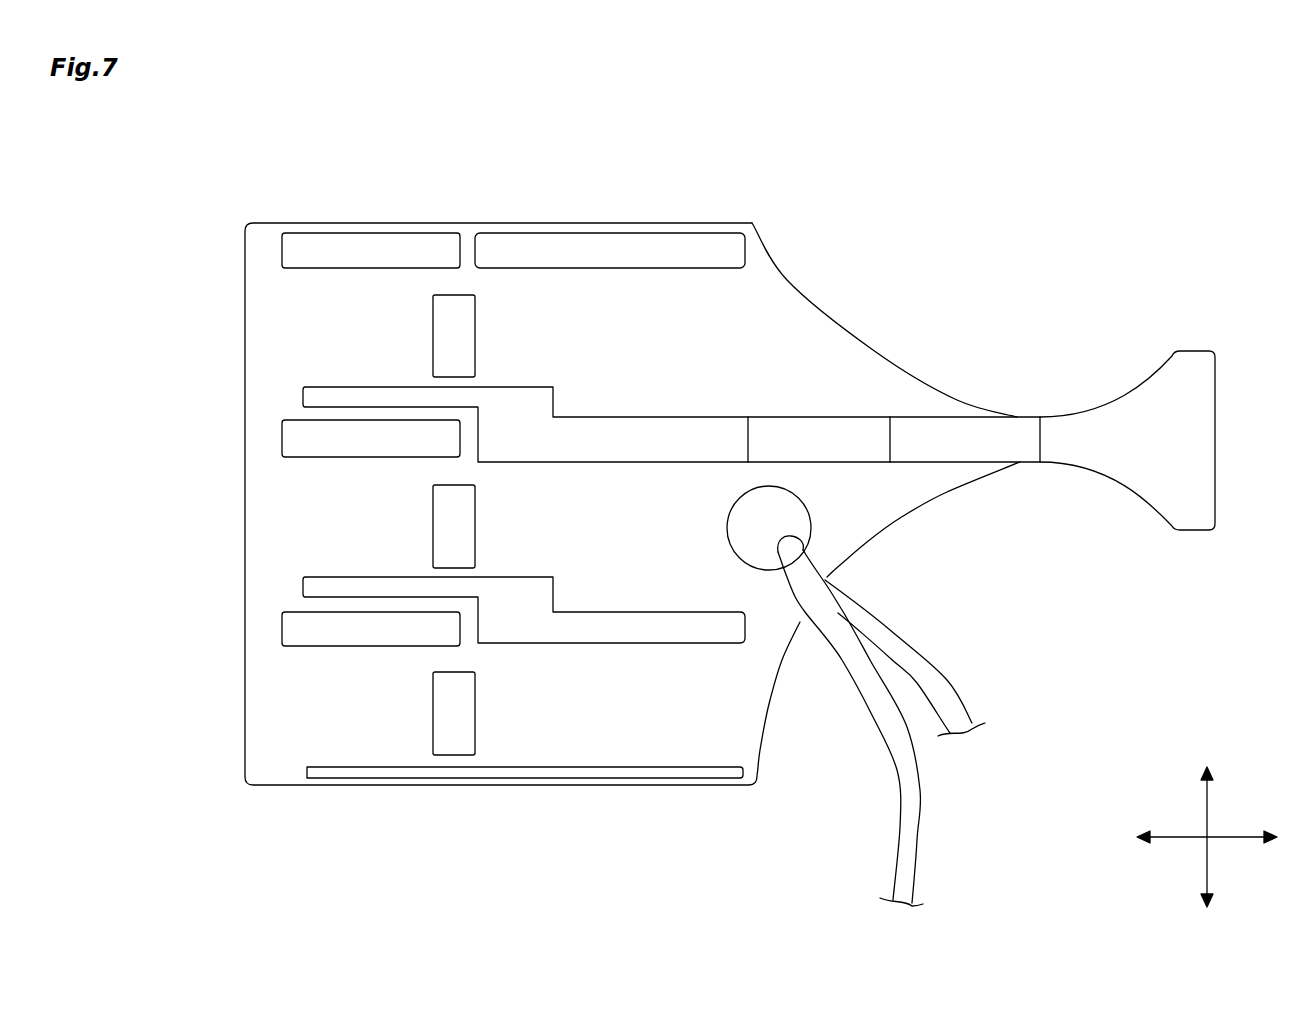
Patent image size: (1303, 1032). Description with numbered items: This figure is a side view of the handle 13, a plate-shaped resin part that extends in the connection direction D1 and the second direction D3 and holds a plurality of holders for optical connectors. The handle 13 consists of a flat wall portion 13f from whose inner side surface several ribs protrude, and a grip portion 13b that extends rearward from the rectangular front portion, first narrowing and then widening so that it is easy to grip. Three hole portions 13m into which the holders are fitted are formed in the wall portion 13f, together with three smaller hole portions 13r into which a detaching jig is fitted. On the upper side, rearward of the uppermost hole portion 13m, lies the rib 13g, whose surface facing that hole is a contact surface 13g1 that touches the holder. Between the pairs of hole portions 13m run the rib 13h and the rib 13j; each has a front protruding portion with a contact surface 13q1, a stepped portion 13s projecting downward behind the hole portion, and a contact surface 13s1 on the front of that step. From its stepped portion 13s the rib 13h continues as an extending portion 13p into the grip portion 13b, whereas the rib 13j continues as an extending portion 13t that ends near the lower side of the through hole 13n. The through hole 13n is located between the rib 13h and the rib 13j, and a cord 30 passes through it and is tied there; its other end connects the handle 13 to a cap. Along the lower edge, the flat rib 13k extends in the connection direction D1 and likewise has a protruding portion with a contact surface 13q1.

The handle 13 is at (1013, 185).
The grip portion 13b is at (1192, 440).
The wall portion 13f is at (765, 292).
The rib 13g is at (603, 240).
The contact surface 13g1 is at (468, 234).
The rib 13h is at (345, 385).
The rib 13j is at (342, 580).
The rib 13k is at (343, 780).
The hole portion 13m is at (338, 262).
The through hole 13n is at (806, 512).
The extending portion 13p is at (687, 430).
The contact surface 13q1 is at (305, 392).
The hole portion 13r is at (450, 308).
The stepped portion 13s is at (522, 440).
The contact surface 13s1 is at (468, 448).
The extending portion 13t is at (665, 630).
The cord 30 is at (925, 826).
The connection direction D1 is at (1178, 842).
The second direction D3 is at (1215, 812).